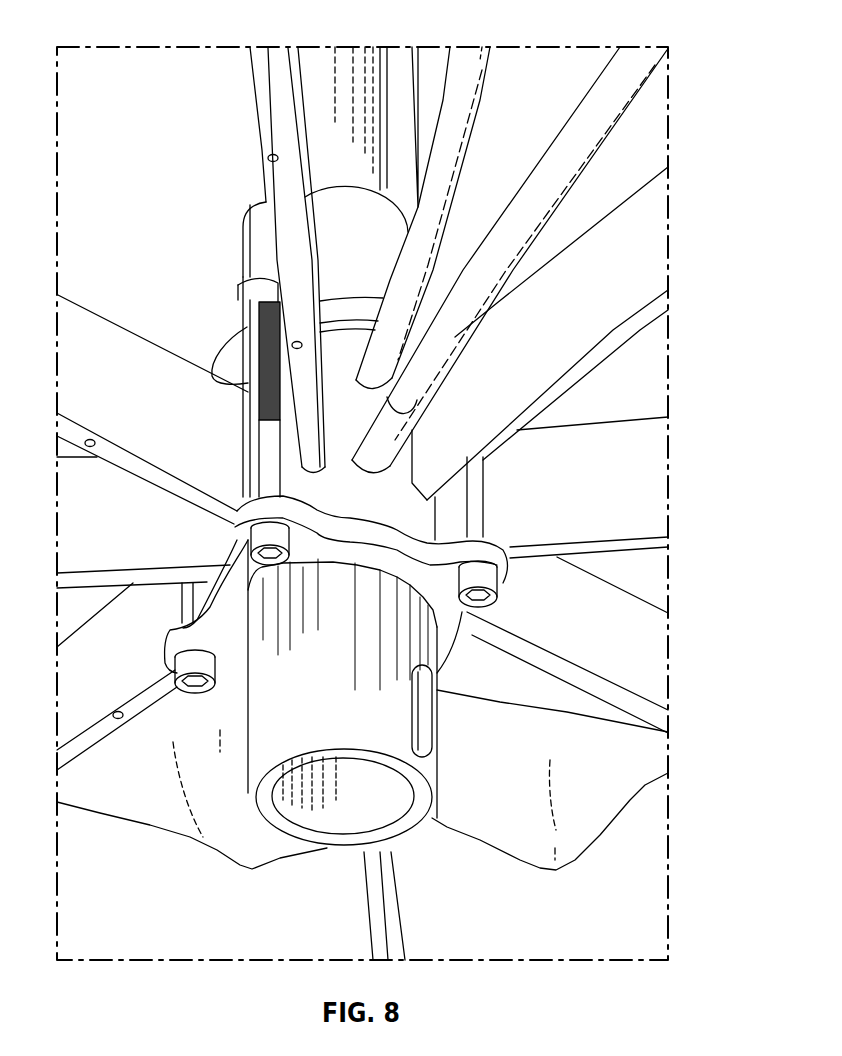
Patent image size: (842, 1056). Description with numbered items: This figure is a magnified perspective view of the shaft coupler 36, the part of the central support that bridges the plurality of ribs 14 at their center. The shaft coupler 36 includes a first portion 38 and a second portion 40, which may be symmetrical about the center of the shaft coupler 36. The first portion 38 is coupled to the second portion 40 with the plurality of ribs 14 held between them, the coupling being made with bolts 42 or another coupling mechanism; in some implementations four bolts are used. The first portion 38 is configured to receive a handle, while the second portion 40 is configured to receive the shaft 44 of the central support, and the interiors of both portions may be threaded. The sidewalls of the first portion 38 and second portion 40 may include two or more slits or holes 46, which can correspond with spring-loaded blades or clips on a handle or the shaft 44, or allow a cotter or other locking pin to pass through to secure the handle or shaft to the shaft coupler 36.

The ribs 14 is at (648, 232).
The shaft coupler 36 is at (263, 693).
The first portion 38 is at (263, 752).
The second portion 40 is at (347, 210).
The bolts 42 is at (268, 460).
The shaft 44 is at (293, 77).
The slits or holes 46 is at (425, 733).